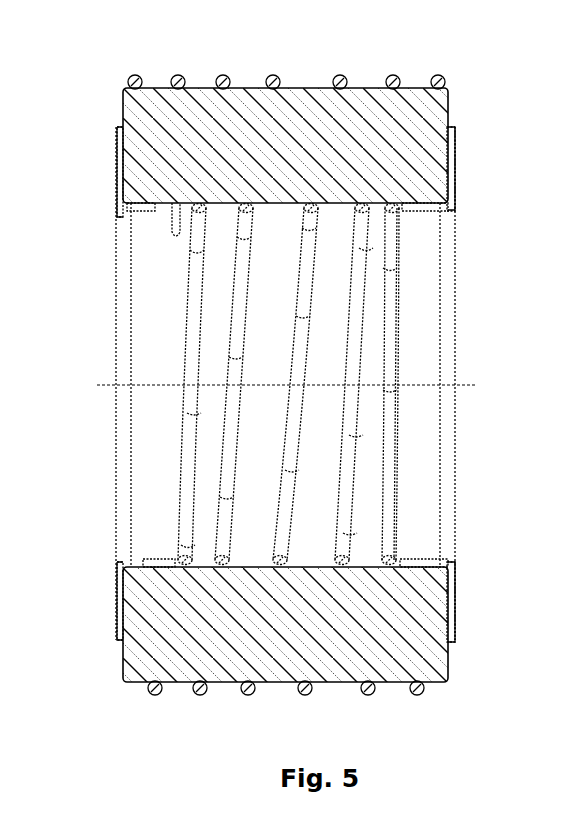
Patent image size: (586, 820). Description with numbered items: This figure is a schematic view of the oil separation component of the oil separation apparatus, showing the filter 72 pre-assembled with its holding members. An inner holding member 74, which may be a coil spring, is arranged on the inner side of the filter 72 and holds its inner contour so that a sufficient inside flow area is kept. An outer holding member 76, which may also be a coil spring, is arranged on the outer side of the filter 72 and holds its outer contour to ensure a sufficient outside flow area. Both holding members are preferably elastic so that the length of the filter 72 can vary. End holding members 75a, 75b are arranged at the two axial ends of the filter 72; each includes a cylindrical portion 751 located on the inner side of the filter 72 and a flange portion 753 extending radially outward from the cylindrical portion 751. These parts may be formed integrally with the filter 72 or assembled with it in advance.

The filter 72 is at (405, 117).
The inner holding member 74 is at (343, 473).
The outer holding member 76 is at (341, 77).
The end holding member 75a is at (120, 160).
The end holding member 75b is at (447, 185).
The cylindrical portion 751 is at (151, 207).
The flange portion 753 is at (118, 190).